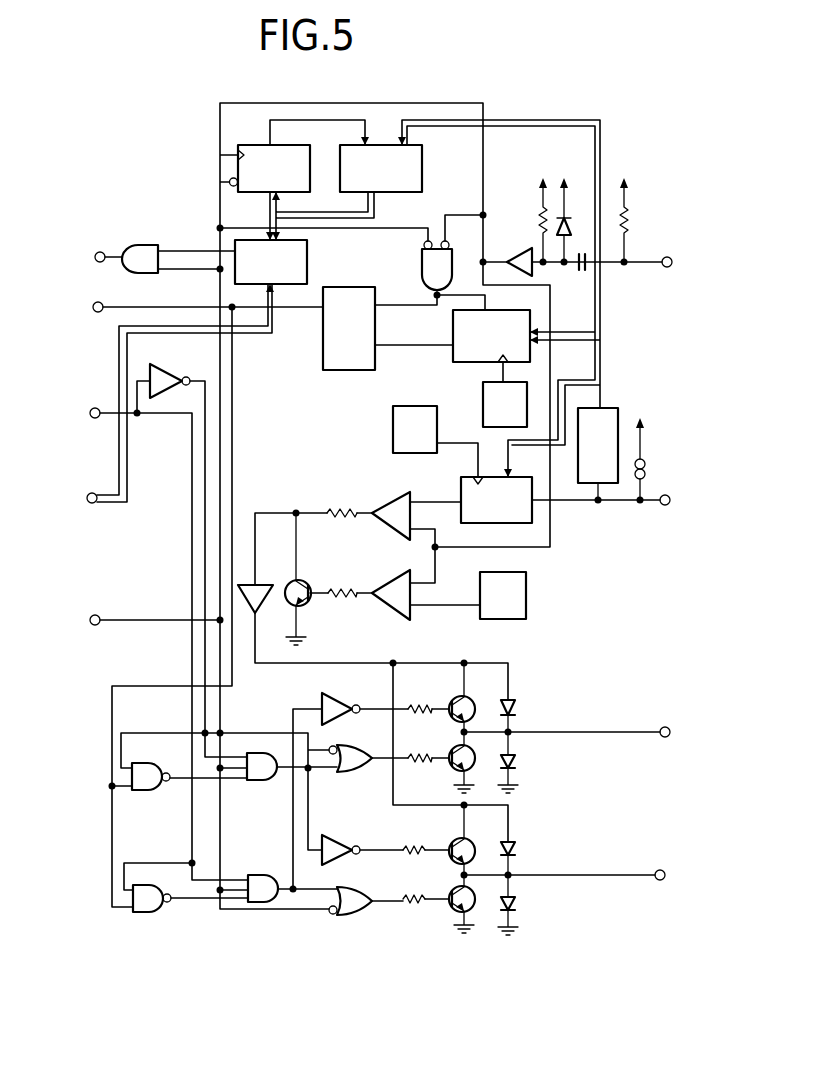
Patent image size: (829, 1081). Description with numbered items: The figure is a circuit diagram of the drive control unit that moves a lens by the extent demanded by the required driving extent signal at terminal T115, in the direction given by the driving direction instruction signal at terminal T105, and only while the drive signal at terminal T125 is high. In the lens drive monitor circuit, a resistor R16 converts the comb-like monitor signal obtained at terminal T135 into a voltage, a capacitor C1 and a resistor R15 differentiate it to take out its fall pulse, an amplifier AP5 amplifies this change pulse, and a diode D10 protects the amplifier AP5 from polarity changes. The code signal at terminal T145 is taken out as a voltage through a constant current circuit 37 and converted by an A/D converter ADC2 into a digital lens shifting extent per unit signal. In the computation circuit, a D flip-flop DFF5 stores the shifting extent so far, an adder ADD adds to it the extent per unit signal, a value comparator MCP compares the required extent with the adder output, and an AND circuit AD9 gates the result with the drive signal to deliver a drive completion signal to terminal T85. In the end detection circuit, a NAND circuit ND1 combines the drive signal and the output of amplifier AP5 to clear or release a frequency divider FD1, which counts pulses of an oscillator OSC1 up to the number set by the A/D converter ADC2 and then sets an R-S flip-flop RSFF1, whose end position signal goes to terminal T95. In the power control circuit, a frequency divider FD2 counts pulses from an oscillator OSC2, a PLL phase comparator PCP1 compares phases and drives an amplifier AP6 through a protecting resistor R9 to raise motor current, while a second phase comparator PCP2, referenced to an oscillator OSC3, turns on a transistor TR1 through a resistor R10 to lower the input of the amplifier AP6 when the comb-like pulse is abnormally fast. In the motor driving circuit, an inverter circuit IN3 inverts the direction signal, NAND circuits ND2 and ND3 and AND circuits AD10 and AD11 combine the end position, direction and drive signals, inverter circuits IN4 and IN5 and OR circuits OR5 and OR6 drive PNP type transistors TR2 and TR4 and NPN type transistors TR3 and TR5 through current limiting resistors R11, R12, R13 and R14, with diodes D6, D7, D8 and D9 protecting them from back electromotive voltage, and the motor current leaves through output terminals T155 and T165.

The D flip-flop DFF5 is at (250, 145).
The adder ADD is at (424, 178).
The value comparator MCP is at (307, 260).
The inversion input OR (NAND) circuit ND1 is at (420, 262).
The AND circuit AD9 is at (136, 243).
The R-S flip-flop RSFF1 is at (323, 350).
The frequency divider FD1 is at (453, 320).
The oscillator OSC1 is at (483, 396).
The oscillator OSC2 is at (393, 432).
The frequency divider FD2 is at (461, 482).
The A/D converter ADC2 is at (618, 410).
The constant current circuit 37 is at (645, 465).
The amplifier AP5 is at (514, 253).
The resistor R15 is at (540, 213).
The diode D10 is at (567, 223).
The capacitor C1 is at (582, 274).
The resistor R16 is at (628, 220).
The terminal T85 is at (83, 260).
The terminal T95 is at (81, 311).
The terminal T105 is at (74, 417).
The terminal T115 is at (71, 502).
The terminal T125 is at (74, 624).
The terminal T135 is at (683, 266).
The terminal T145 is at (681, 504).
The output terminal T155 is at (681, 736).
The output terminal T165 is at (676, 879).
The inverter circuit IN3 is at (157, 367).
The protecting resistor R9 is at (339, 508).
The PLL phase comparator PCP1 is at (393, 530).
The amplifier AP6 is at (262, 583).
The transistor TR1 is at (306, 604).
The resistor R10 is at (341, 588).
The PLL phase comparator PCP2 is at (392, 608).
The oscillator OSC3 is at (526, 598).
The inverter circuit IN4 is at (328, 694).
The current limiting resistor R11 is at (419, 705).
The PNP type transistor TR2 is at (470, 700).
The diode D6 is at (518, 707).
The current limiting resistor R12 is at (419, 754).
The NPN type transistor TR3 is at (452, 766).
The diode D7 is at (518, 761).
The NAND circuit ND2 is at (141, 791).
The AND circuit AD10 is at (256, 781).
The OR circuit OR5 is at (354, 772).
The inverter circuit IN5 is at (332, 841).
The current limiting resistor R13 is at (413, 847).
The PNP type transistor TR4 is at (470, 846).
The diode D8 is at (518, 851).
The current limiting resistor R14 is at (413, 895).
The NPN type transistor TR5 is at (452, 907).
The diode D9 is at (518, 907).
The NAND circuit ND3 is at (143, 913).
The AND circuit AD11 is at (262, 903).
The OR circuit OR6 is at (353, 916).